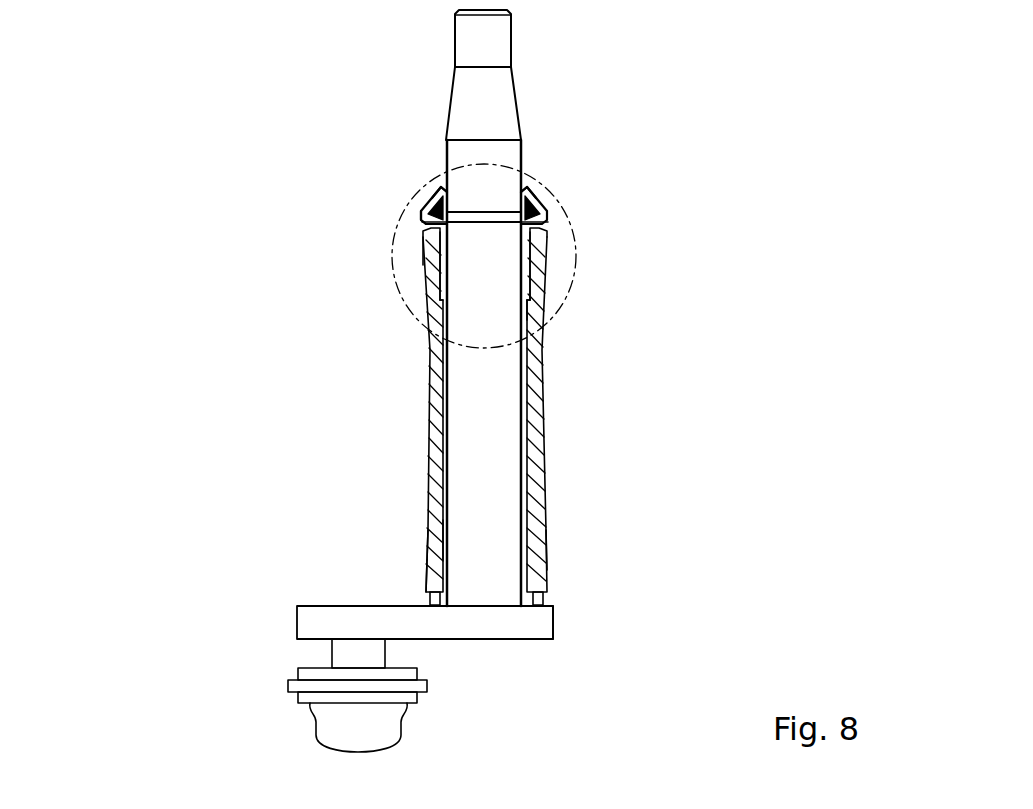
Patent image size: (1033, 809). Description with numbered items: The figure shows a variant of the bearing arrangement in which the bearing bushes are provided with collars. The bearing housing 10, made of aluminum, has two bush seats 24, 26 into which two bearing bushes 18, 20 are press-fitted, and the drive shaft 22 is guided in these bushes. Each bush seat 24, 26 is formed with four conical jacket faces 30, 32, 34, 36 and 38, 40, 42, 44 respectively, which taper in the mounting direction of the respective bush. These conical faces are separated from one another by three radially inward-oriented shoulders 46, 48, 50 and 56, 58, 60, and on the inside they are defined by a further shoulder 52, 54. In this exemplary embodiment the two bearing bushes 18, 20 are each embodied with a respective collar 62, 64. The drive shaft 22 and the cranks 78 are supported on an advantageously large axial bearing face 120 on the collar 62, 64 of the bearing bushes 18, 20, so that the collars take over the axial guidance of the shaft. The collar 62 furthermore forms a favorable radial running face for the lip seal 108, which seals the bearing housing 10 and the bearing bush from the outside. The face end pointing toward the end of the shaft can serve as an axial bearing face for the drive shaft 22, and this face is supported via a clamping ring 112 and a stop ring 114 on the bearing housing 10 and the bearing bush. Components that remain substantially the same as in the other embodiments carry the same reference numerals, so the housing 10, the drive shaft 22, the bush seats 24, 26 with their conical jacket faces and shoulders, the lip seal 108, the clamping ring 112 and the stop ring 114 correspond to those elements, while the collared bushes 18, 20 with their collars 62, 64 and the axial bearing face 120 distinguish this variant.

The bearing housing 10 is at (437, 458).
The bearing bush 18 is at (428, 280).
The bearing bush 20 is at (531, 530).
The drive shaft 22 is at (480, 45).
The bush seat 24 is at (447, 277).
The bush seat 26 is at (430, 593).
The conical jacket face 30 is at (548, 233).
The conical jacket face 32 is at (540, 250).
The conical jacket face 34 is at (540, 277).
The conical jacket face 36 is at (533, 295).
The conical jacket face 38 is at (545, 525).
The conical jacket face 40 is at (547, 553).
The conical jacket face 42 is at (455, 597).
The conical jacket face 44 is at (550, 598).
The shoulder 46 is at (437, 210).
The shoulder 48 is at (428, 263).
The shoulder 50 is at (432, 280).
The shoulder 52 is at (440, 283).
The shoulder 54 is at (443, 530).
The shoulder 56 is at (433, 547).
The shoulder 58 is at (433, 563).
The shoulder 60 is at (443, 597).
The collar 62 is at (424, 223).
The collar 64 is at (548, 606).
The crank 78 is at (532, 618).
The lip seal 108 is at (443, 197).
The clamping ring 112 is at (540, 212).
The stop ring 114 is at (545, 202).
The axial bearing face 120 is at (443, 606).